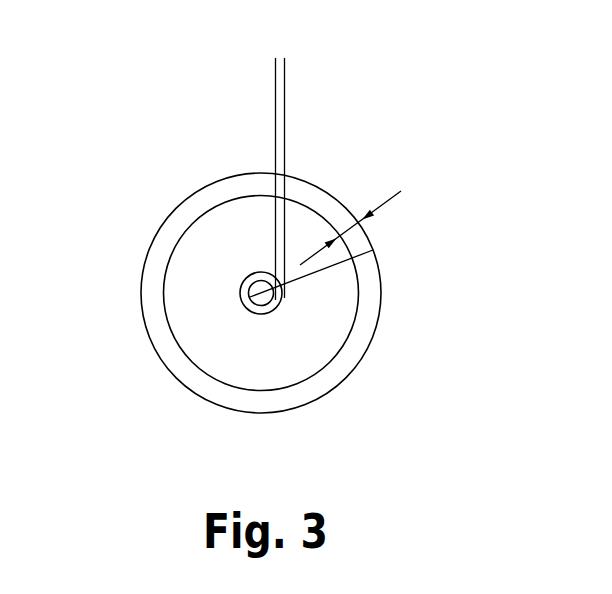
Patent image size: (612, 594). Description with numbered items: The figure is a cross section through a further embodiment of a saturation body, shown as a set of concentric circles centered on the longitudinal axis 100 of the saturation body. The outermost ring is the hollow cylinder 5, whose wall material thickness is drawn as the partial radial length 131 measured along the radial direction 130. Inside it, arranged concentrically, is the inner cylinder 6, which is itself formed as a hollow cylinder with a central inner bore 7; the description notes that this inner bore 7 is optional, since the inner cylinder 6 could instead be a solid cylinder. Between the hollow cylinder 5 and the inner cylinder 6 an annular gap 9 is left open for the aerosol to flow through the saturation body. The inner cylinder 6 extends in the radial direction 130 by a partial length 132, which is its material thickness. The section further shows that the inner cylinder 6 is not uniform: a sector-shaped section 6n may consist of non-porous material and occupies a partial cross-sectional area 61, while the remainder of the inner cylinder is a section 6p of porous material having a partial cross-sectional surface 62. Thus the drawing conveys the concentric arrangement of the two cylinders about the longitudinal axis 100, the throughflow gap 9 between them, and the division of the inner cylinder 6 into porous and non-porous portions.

The hollow cylinder 5 is at (318, 185).
The inner cylinder 6 is at (246, 264).
The inner bore 7 is at (261, 292).
The gap 9 is at (243, 322).
The partial cross-sectional area 61 is at (283, 304).
The partial cross-sectional surface 62 is at (239, 302).
The section of porous material 6p is at (258, 292).
The sector-shaped section 6n is at (279, 306).
The longitudinal axis 100 is at (247, 305).
The radial direction 130 is at (361, 274).
The partial radial length 131 is at (357, 227).
The partial radial length 132 is at (310, 83).